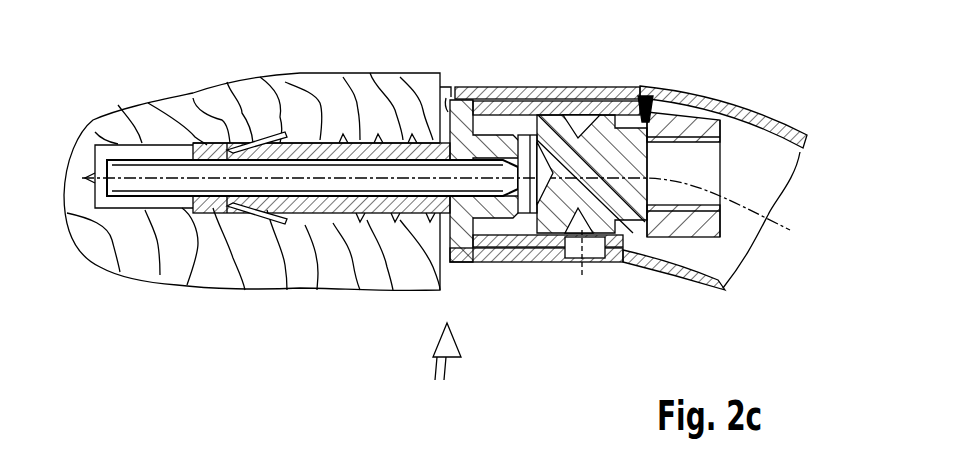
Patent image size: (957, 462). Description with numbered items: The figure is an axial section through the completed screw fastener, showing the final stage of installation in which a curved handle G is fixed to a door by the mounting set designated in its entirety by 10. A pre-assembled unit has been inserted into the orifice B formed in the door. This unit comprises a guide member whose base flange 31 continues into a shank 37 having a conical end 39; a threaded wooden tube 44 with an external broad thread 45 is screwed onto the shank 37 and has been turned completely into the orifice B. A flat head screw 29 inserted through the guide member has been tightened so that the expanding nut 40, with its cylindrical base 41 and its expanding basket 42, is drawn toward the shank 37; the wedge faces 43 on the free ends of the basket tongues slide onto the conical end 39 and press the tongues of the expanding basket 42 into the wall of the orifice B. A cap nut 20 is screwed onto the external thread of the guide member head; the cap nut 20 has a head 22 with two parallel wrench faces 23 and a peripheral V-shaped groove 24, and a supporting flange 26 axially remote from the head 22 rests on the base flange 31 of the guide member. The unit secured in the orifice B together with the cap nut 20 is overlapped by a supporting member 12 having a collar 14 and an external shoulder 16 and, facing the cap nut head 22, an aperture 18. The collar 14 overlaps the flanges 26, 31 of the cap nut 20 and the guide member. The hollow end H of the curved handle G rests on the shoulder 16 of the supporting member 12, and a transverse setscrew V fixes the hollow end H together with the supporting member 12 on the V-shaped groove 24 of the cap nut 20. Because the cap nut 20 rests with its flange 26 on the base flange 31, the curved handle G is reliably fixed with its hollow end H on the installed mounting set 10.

The mounting set 10 is at (442, 368).
The supporting member 12 is at (542, 104).
The collar 14 is at (464, 90).
The external shoulder 16 is at (497, 100).
The aperture 18 is at (685, 157).
The cap nut 20 is at (603, 193).
The head 22 is at (646, 96).
The wrench faces 23 is at (672, 264).
The V-shaped groove 24 is at (578, 135).
The supporting flange 26 is at (473, 263).
The flat head screw 29 is at (141, 165).
The base flange 31 is at (444, 84).
The shank 37 is at (323, 150).
The conical end 39 is at (243, 203).
The expanding nut 40 is at (210, 286).
The cylindrical base 41 is at (208, 209).
The expanding basket 42 is at (235, 140).
The wedge faces 43 is at (282, 145).
The threaded wooden tube 44 is at (380, 248).
The external broad thread 45 is at (363, 212).
The orifice B is at (120, 208).
The curved handle G is at (765, 228).
The hollow end H is at (752, 124).
The transverse setscrew V is at (578, 258).